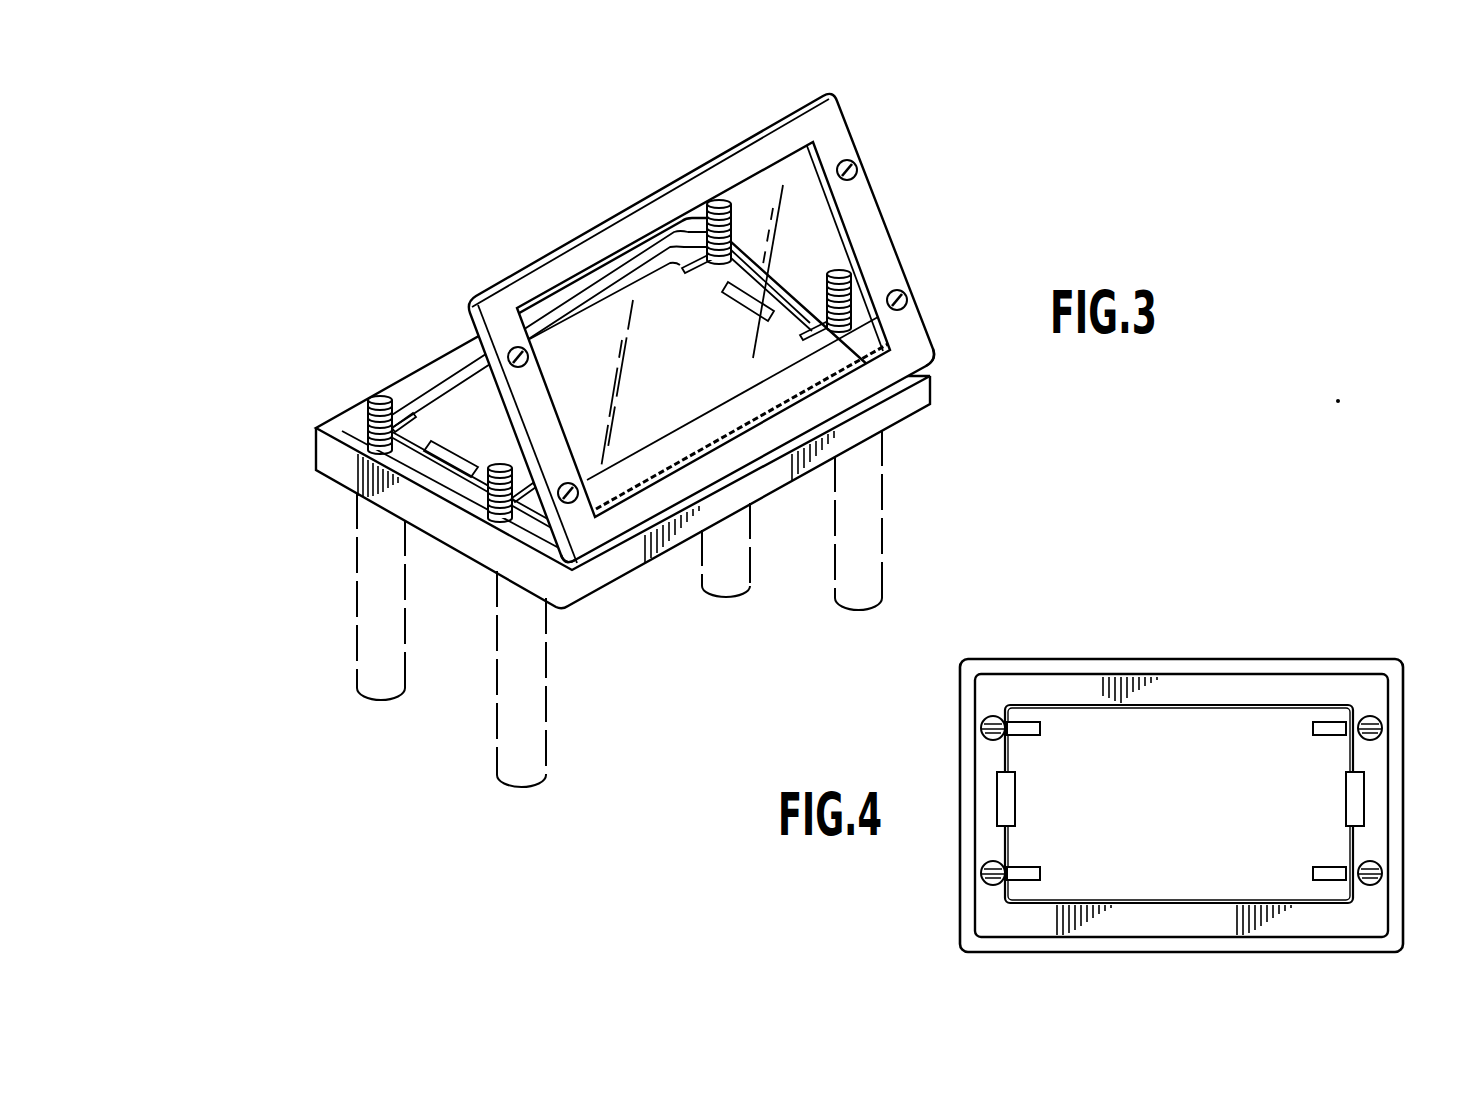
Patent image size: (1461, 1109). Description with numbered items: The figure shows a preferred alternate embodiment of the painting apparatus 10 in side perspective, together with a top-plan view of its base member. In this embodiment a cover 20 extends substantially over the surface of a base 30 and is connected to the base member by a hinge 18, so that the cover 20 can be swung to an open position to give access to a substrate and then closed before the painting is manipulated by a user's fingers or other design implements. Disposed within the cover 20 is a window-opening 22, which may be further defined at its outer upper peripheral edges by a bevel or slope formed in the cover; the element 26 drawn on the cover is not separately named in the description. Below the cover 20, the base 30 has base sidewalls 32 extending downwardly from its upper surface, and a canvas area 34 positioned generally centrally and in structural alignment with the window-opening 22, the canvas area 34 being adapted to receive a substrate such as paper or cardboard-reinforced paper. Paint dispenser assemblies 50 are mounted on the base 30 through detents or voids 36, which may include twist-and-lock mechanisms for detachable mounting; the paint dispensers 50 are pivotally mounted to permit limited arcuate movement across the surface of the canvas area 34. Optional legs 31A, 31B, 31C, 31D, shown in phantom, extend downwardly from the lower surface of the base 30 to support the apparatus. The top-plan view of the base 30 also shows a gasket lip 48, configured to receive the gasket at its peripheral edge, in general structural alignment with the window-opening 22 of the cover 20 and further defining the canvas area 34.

In FIG. 3, the painting apparatus 10 is at (330, 250).
In FIG. 3, the hinge 18 is at (594, 562).
In FIG. 3, the cover 20 is at (456, 306).
In FIG. 3, the window-opening 22 is at (933, 364).
In FIG. 3, the transparent window pane 26 is at (835, 233).
In FIG. 3, the base 30 is at (322, 568).
In FIG. 3, the leg 31A is at (372, 665).
In FIG. 3, the leg 31B is at (532, 712).
In FIG. 3, the leg 31C is at (713, 572).
In FIG. 3, the leg 31D is at (872, 470).
In FIG. 3, the base sidewall 32 is at (356, 478).
In FIG. 4, the canvas area 34 is at (1213, 692).
In FIG. 3, the detents or voids 36 is at (857, 170).
In FIG. 3, the gasket lip 48 is at (717, 420).
In FIG. 4, the gasket lip 48 is at (1085, 707).
In FIG. 3, the paint dispenser assembly 50 is at (712, 205).
In FIG. 4, the paint dispenser assembly 50 is at (985, 728).